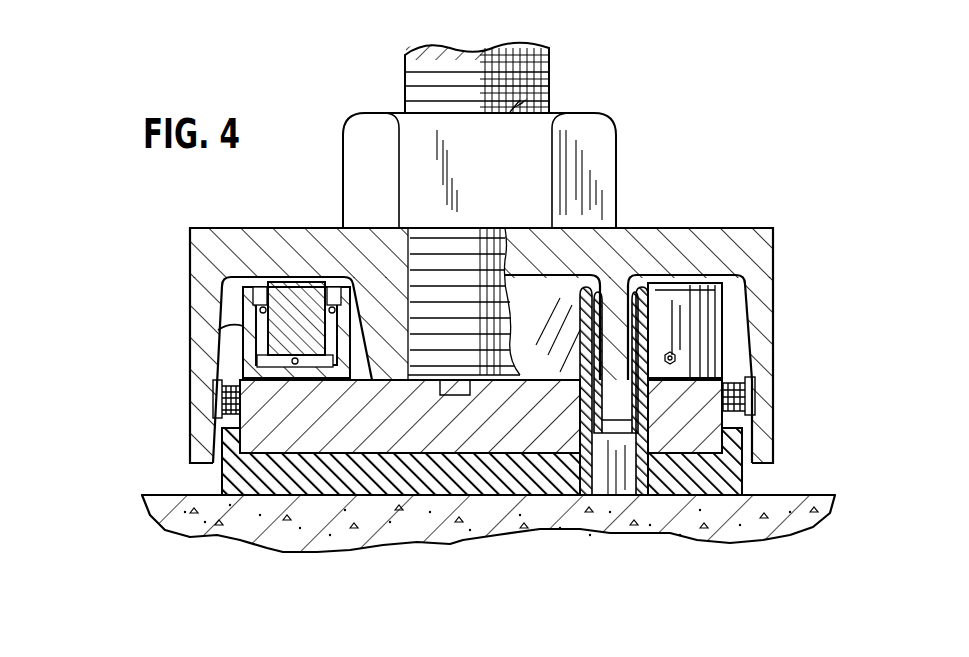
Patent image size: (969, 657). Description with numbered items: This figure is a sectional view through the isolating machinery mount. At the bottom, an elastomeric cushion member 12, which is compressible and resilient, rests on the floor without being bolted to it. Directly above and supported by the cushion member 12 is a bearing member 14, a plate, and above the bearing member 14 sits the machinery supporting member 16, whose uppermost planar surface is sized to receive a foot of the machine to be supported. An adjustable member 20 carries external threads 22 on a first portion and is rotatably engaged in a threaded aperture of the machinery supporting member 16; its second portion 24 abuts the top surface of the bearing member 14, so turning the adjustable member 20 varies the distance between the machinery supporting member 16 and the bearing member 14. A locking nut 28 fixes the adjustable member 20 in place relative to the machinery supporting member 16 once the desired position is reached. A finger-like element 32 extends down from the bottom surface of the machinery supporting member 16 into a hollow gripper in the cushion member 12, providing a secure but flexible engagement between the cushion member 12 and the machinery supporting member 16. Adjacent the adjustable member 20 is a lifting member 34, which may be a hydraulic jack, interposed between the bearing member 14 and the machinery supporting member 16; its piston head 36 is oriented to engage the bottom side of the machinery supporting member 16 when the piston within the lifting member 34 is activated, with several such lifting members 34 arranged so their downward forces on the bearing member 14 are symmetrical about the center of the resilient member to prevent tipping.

The elastomeric cushion member 12 is at (222, 480).
The bearing member 14 is at (250, 420).
The machinery supporting member 16 is at (773, 260).
The adjustable member 20 is at (405, 78).
The external threads 22 is at (520, 104).
The second portion 24 is at (455, 382).
The locking nut 28 is at (608, 190).
The finger-like element 32 is at (620, 340).
The lifting member 34 is at (243, 345).
The piston head 36 is at (300, 278).